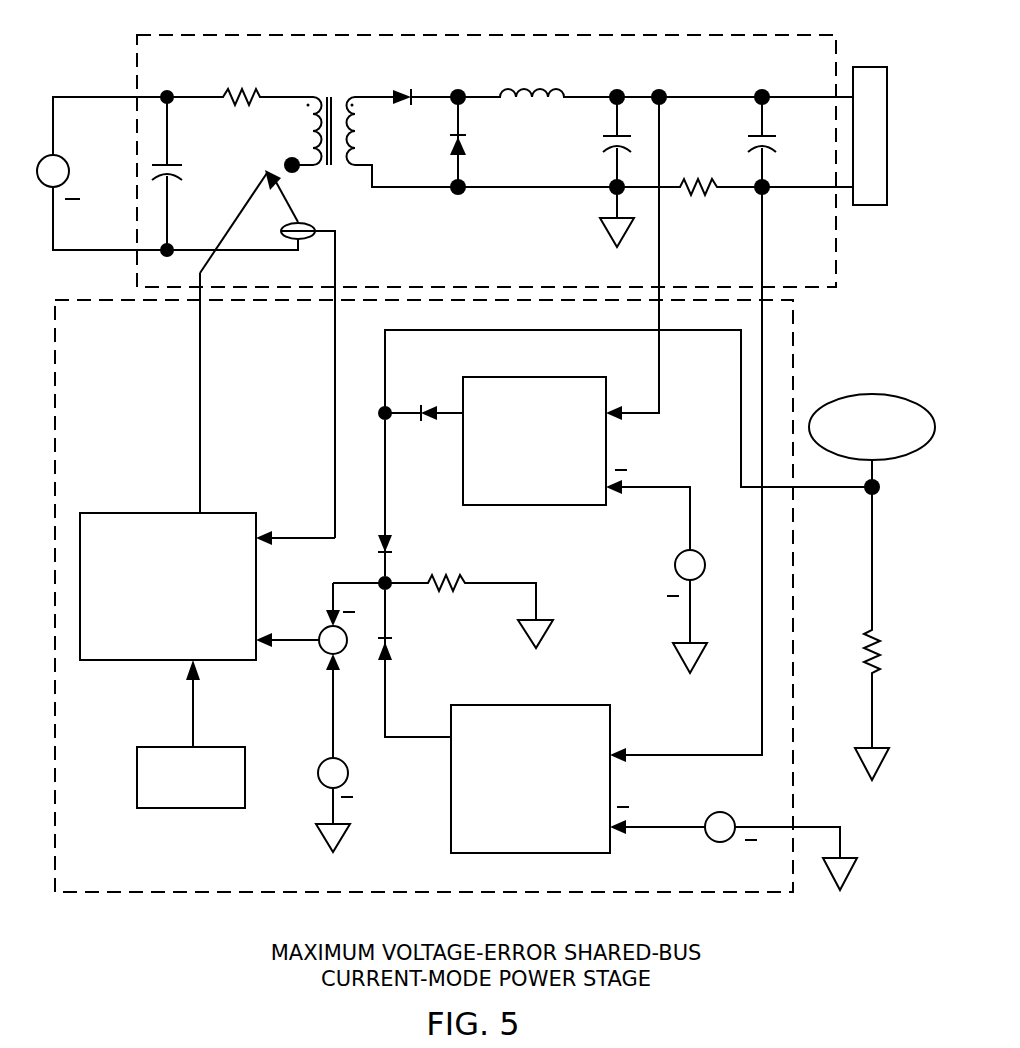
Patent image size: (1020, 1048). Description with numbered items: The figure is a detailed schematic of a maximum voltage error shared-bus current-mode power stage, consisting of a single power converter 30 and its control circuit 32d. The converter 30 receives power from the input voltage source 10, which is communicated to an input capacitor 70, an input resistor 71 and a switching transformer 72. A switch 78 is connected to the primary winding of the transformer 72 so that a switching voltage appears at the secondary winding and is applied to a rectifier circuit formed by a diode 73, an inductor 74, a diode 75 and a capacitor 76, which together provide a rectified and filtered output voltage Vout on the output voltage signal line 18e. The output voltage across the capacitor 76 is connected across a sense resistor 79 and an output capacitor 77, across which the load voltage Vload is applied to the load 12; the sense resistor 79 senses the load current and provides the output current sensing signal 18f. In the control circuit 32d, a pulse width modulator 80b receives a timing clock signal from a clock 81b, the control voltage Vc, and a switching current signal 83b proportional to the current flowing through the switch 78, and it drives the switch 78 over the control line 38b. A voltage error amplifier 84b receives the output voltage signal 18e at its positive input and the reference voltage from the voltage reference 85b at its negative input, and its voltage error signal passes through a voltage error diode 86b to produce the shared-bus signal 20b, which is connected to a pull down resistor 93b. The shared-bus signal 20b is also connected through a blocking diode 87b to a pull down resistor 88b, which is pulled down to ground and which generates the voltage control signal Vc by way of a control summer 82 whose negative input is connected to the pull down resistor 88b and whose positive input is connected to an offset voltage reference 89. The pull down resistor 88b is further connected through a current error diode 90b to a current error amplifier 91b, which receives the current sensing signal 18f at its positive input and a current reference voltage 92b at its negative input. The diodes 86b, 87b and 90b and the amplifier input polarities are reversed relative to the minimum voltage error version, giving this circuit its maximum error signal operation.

The input voltage source 10 is at (57, 155).
The load 12 is at (858, 67).
The power converter 30 is at (170, 35).
The input capacitor 70 is at (176, 160).
The input resistor 71 is at (260, 100).
The switching transformer 72 is at (343, 95).
The diode 73 is at (400, 105).
The inductor 74 is at (507, 92).
The diode 75 is at (470, 143).
The capacitor 76 is at (605, 149).
The output capacitor 77 is at (752, 135).
The switch 78 is at (296, 208).
The sense resistor 79 is at (718, 190).
The output voltage signal 18e is at (654, 418).
The output current sensing signal 18f is at (766, 275).
The shared-bus signal 20b is at (850, 398).
The control circuit 32d is at (345, 892).
The switch control line 38b is at (200, 400).
The pulse width modulator 80b is at (100, 513).
The clock 81b is at (137, 792).
The control summer 82 is at (322, 652).
The switching current signal 83b is at (335, 366).
The voltage error amplifier 84b is at (510, 377).
The voltage reference 85b is at (675, 565).
The voltage error diode 86b is at (432, 405).
The blocking diode 87b is at (391, 545).
The pull down resistor 88b is at (462, 588).
The offset voltage reference 89 is at (318, 773).
The current error diode 90b is at (393, 646).
The current error amplifier 91b is at (490, 853).
The current reference voltage 92b is at (720, 842).
The pull down resistor 93b is at (862, 682).